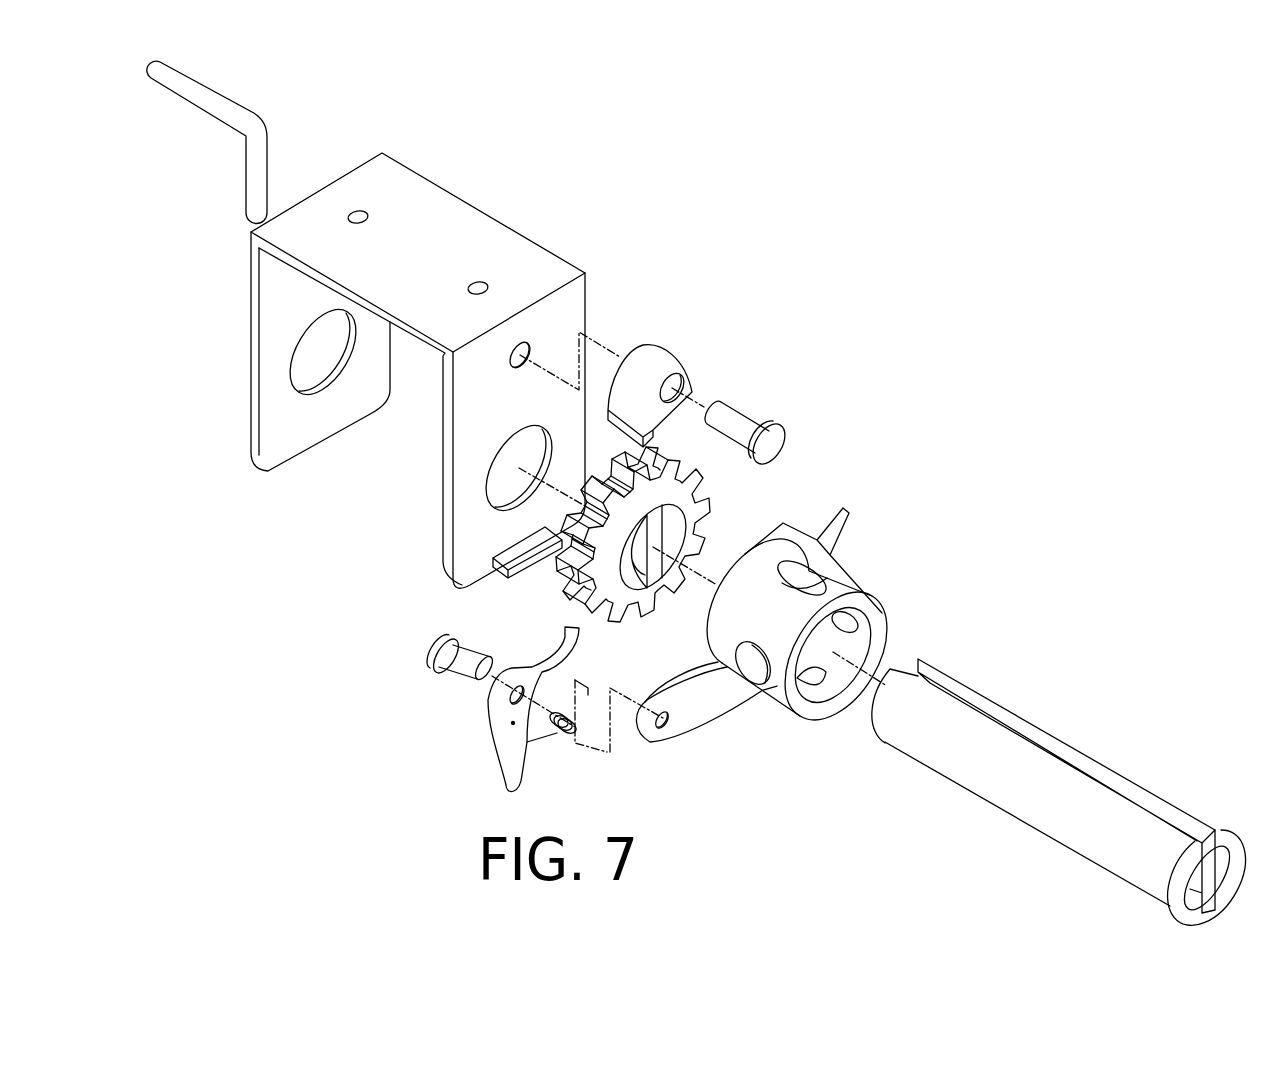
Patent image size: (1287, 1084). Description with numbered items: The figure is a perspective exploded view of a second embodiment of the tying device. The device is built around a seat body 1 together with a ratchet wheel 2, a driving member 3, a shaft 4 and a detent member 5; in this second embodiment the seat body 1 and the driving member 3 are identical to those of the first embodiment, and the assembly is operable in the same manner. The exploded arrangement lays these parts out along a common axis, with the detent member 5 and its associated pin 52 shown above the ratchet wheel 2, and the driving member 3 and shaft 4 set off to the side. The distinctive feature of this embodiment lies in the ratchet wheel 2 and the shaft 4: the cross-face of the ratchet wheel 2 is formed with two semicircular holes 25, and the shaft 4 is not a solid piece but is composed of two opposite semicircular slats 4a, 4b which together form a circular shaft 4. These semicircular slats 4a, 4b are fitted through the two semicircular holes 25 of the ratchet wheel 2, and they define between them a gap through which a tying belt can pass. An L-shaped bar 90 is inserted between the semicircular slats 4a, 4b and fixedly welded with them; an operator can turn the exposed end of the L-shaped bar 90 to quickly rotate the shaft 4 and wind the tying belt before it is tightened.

The L-shaped bar 90 is at (212, 102).
The seat body 1 is at (478, 248).
The detent member 5 is at (652, 370).
The pin 52 is at (740, 430).
The ratchet wheel 2 is at (750, 488).
The semicircular holes 25 is at (673, 528).
The driving member 3 is at (872, 577).
The shaft 4 is at (1042, 678).
The semicircular slat 4a is at (1132, 784).
The semicircular slat 4b is at (1052, 801).